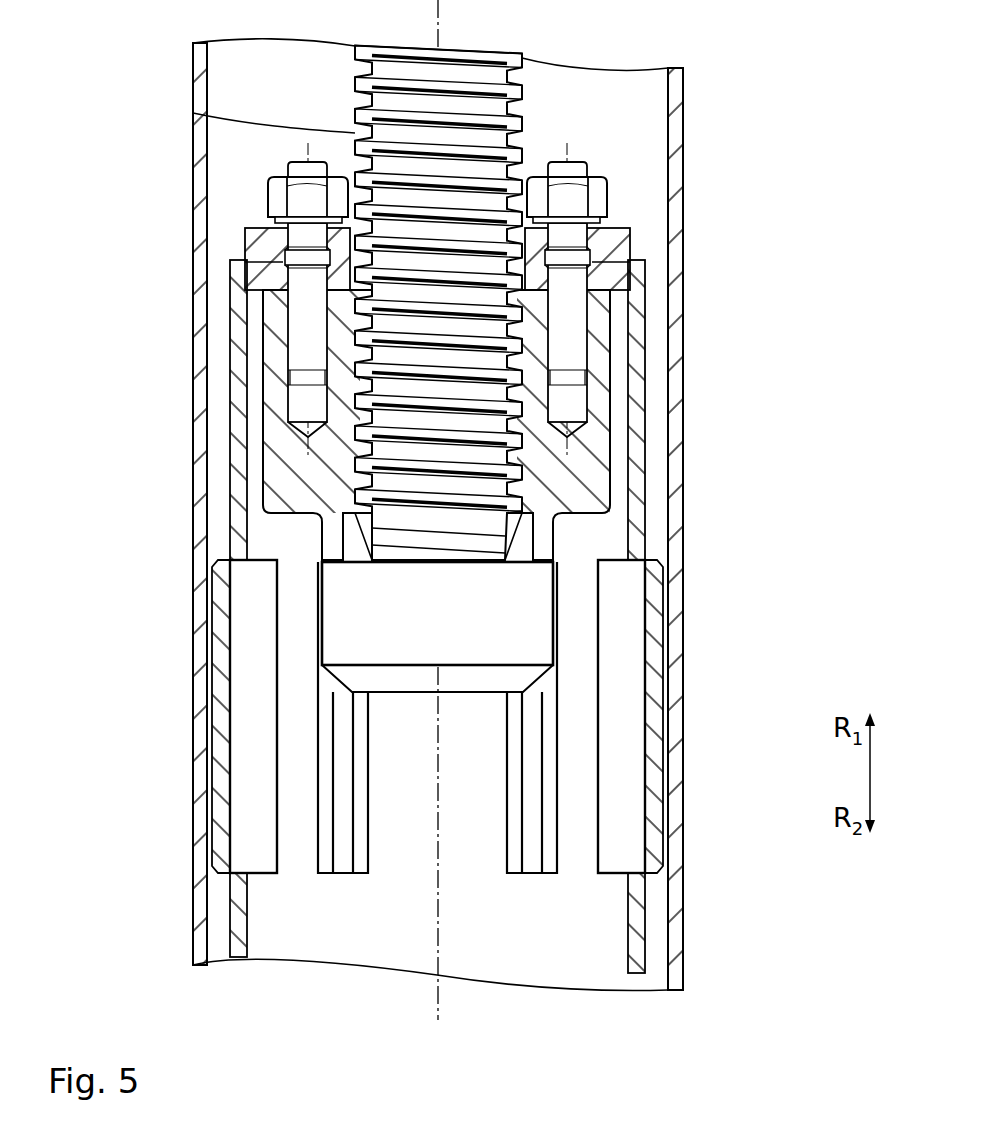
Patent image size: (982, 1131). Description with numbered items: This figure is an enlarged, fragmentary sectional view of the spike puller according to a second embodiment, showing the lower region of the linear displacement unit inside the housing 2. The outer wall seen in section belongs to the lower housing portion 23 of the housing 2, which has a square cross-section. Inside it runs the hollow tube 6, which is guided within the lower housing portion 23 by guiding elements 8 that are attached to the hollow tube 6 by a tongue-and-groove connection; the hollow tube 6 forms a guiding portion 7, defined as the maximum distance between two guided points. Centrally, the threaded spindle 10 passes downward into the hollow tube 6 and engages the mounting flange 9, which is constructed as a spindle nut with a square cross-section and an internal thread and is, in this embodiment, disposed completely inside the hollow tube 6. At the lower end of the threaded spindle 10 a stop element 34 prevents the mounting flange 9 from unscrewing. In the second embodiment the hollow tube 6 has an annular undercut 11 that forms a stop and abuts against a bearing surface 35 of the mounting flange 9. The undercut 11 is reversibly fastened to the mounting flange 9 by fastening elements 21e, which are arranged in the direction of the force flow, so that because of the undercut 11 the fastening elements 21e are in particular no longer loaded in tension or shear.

The housing 2 is at (690, 623).
The hollow tube 6 is at (640, 397).
The guiding portion 7 is at (215, 713).
The guiding elements 8 is at (345, 778).
The mounting flange 9 is at (595, 465).
The threaded spindle 10 is at (350, 130).
The annular undercut 11 is at (260, 273).
The fastening elements 21e is at (268, 190).
The lower housing portion 23 is at (688, 342).
The stop element 34 is at (338, 623).
The bearing surface 35 is at (258, 238).